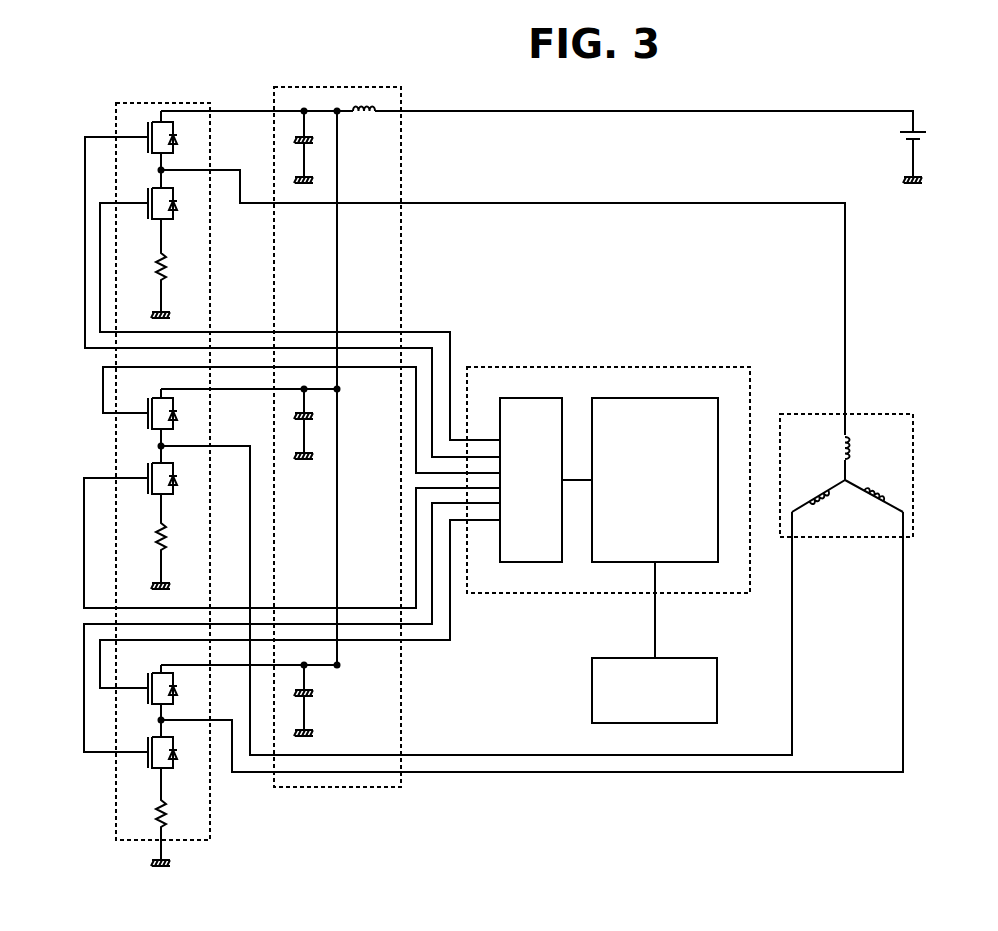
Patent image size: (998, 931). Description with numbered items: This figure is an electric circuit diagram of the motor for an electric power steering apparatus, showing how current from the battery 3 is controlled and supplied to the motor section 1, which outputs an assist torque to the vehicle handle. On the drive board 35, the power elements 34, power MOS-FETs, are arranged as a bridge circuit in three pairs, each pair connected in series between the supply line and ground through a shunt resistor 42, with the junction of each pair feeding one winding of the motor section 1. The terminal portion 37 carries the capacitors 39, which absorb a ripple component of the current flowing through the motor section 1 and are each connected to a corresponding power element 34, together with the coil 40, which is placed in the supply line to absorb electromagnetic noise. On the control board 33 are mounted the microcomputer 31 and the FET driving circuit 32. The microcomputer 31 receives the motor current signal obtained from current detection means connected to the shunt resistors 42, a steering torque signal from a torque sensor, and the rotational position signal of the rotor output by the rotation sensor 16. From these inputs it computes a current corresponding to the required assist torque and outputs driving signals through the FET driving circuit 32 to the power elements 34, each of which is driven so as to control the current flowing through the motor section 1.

The motor section 1 is at (915, 428).
The battery 3 is at (917, 152).
The rotation sensor 16 is at (592, 685).
The microcomputer 31 is at (657, 398).
The FET driving circuit 32 is at (536, 398).
The control board 33 is at (752, 370).
The power elements 34 is at (176, 127).
The drive board 35 is at (133, 103).
The terminal portion 37 is at (390, 87).
The capacitors 39 is at (296, 136).
The coil 40 is at (362, 104).
The shunt resistors 42 is at (158, 263).